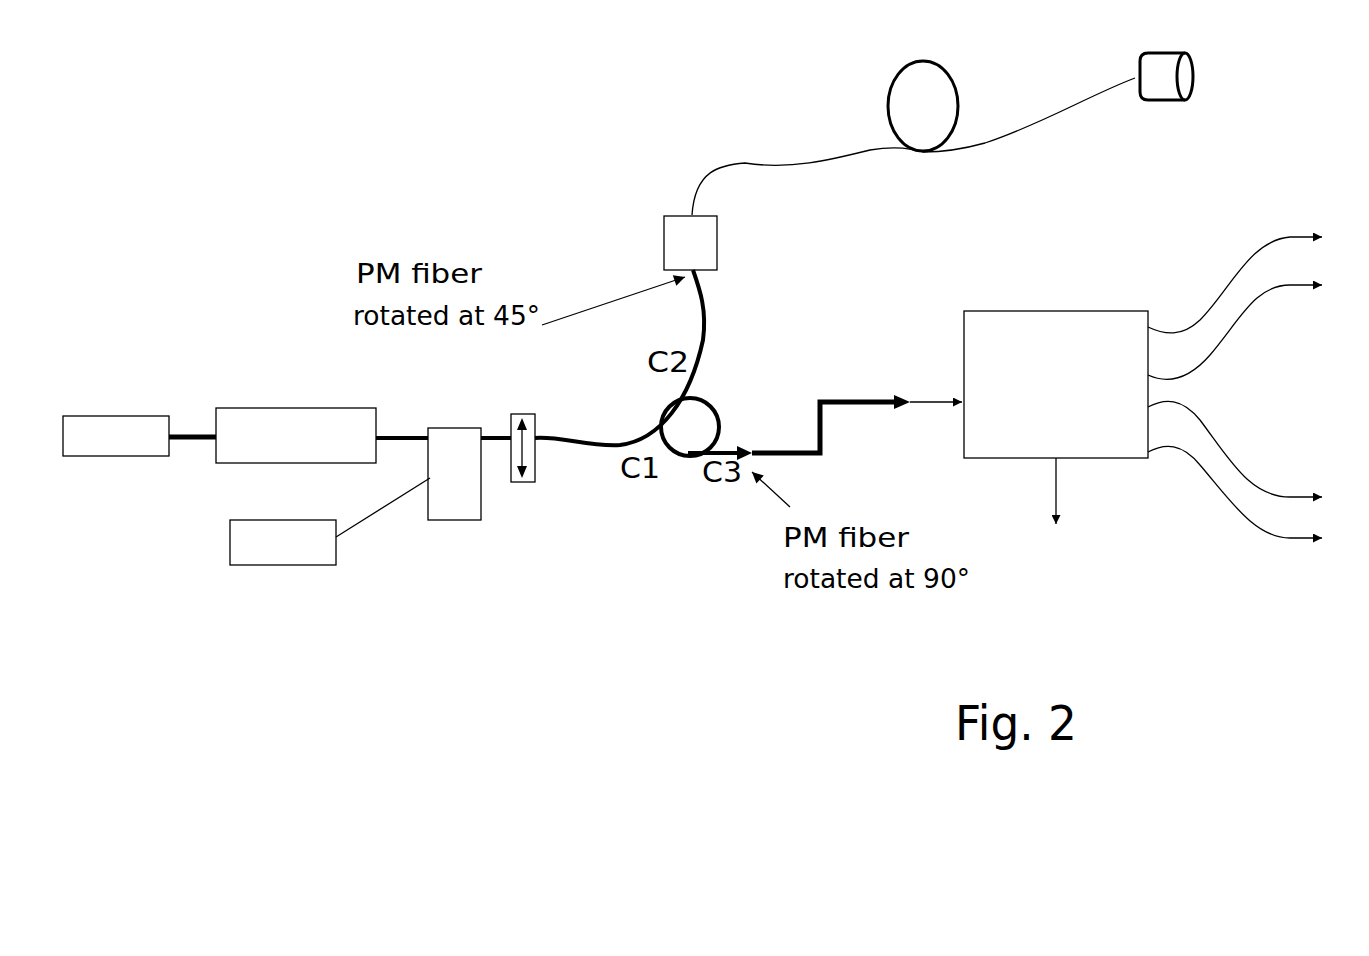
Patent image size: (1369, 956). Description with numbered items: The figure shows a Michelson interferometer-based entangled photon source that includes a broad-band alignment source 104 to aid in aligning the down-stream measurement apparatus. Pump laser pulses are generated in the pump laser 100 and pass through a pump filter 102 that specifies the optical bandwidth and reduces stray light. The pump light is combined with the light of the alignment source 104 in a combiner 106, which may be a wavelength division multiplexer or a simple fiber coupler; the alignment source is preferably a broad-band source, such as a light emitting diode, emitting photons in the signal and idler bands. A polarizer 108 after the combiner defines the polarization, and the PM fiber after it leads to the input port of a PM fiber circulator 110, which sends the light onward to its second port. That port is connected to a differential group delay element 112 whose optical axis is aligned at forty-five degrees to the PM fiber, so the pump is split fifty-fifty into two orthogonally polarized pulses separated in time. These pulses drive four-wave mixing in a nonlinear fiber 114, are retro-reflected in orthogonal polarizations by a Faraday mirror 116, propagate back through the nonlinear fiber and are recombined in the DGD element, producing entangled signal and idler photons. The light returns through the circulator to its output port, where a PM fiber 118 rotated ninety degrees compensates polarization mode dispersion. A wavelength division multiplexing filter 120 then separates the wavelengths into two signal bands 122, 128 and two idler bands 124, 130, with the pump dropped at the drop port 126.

The pump laser 100 is at (116, 437).
The pump filter 102 is at (296, 439).
The broad-band alignment source 104 is at (297, 570).
The combiner 106 is at (454, 456).
The polarizer 108 is at (527, 466).
The PM fiber circulator 110 is at (716, 425).
The differential group delay element 112 is at (657, 219).
The nonlinear fiber 114 is at (936, 78).
The Faraday mirror 116 is at (1201, 60).
The PM fiber 118 is at (857, 447).
The wavelength division multiplexing filter 120 is at (1056, 359).
The signal band 122 is at (1235, 285).
The idler band 124 is at (1243, 514).
The drop port 126 is at (1026, 515).
The signal band 128 is at (1244, 332).
The idler band 130 is at (1240, 465).